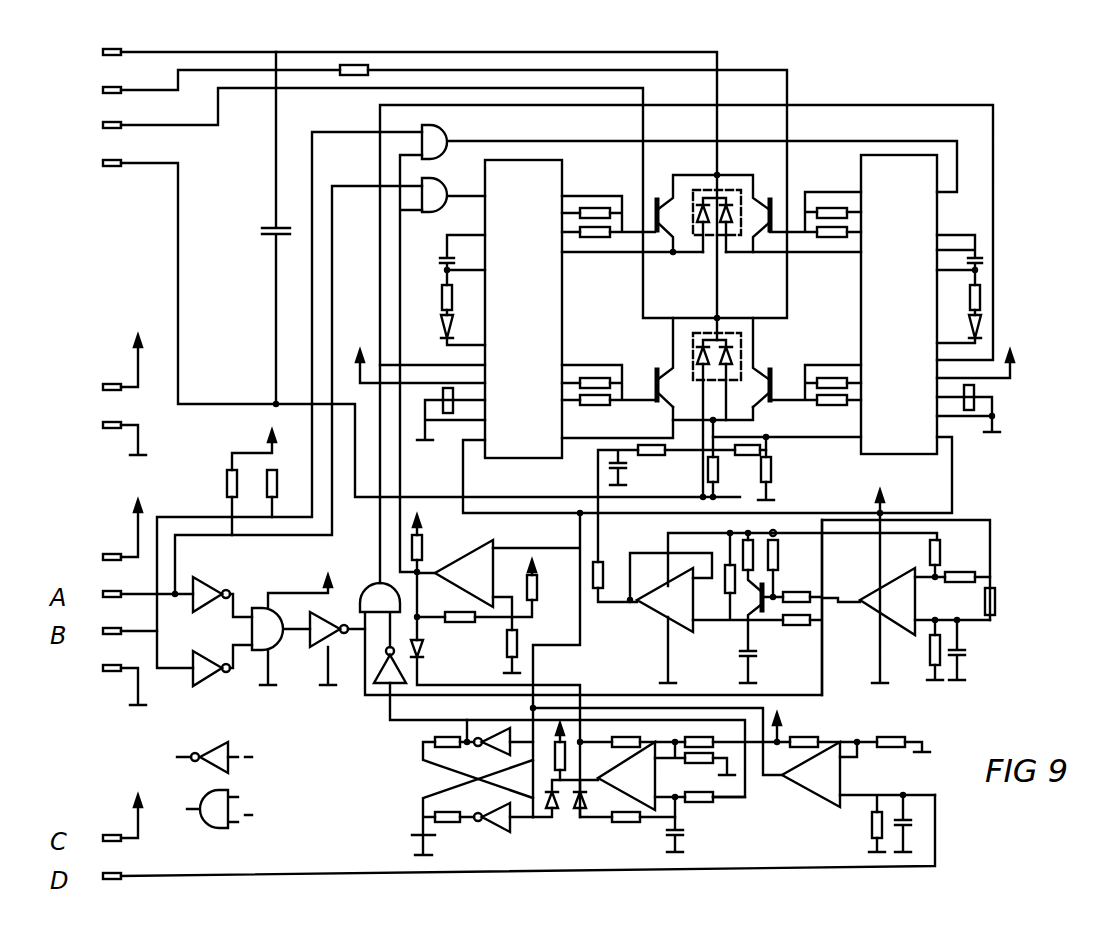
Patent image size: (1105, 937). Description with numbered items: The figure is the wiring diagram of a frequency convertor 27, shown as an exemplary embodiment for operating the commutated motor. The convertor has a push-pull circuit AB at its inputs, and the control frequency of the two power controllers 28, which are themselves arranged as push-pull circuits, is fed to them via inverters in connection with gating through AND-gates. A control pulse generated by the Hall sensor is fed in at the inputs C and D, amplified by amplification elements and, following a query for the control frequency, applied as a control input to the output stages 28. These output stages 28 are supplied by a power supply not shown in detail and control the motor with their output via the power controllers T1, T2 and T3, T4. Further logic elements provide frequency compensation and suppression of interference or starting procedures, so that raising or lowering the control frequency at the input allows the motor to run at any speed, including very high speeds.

The frequency convertor 27 is at (153, 256).
The power controller 28 is at (532, 185).
The power controller T1 is at (657, 362).
The power controller T2 is at (768, 362).
The power controller T3 is at (679, 213).
The power controller T4 is at (746, 213).